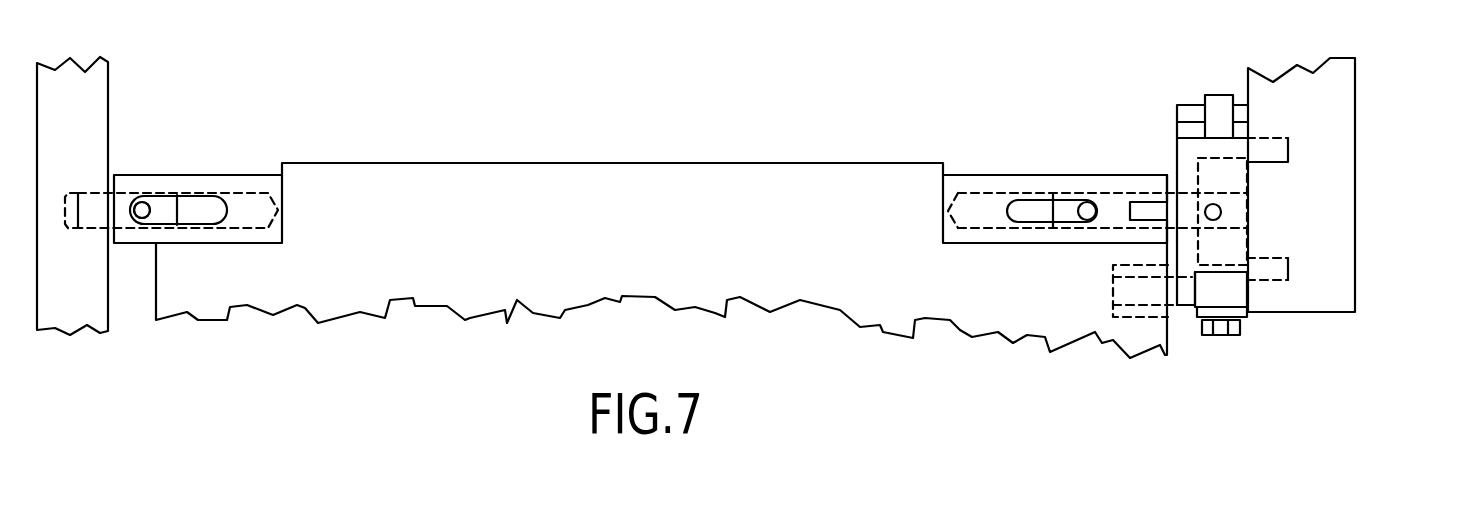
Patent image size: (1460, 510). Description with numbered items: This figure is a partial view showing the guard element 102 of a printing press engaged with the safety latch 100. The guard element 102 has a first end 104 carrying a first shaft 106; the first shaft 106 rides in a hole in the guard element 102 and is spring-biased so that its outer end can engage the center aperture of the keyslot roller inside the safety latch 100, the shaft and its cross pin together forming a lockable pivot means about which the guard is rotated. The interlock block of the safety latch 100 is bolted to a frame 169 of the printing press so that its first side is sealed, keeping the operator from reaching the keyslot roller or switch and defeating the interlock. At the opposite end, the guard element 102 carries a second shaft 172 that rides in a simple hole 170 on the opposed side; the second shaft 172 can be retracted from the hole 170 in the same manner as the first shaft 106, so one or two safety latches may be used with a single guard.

The safety latch 100 is at (1177, 88).
The guard element 102 is at (543, 156).
The first end 104 is at (1074, 174).
The first shaft 106 is at (1216, 228).
The frame 169 is at (1357, 118).
The hole 170 is at (72, 192).
The second shaft 172 is at (133, 196).